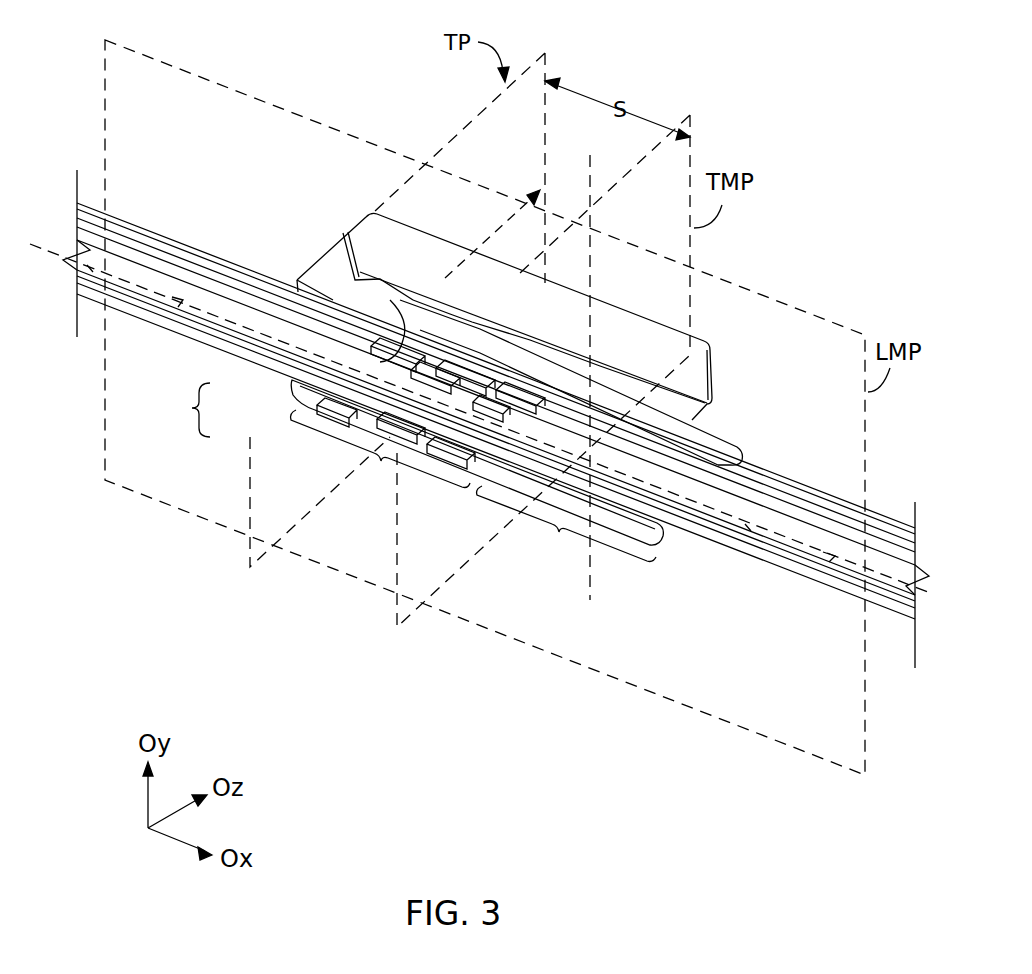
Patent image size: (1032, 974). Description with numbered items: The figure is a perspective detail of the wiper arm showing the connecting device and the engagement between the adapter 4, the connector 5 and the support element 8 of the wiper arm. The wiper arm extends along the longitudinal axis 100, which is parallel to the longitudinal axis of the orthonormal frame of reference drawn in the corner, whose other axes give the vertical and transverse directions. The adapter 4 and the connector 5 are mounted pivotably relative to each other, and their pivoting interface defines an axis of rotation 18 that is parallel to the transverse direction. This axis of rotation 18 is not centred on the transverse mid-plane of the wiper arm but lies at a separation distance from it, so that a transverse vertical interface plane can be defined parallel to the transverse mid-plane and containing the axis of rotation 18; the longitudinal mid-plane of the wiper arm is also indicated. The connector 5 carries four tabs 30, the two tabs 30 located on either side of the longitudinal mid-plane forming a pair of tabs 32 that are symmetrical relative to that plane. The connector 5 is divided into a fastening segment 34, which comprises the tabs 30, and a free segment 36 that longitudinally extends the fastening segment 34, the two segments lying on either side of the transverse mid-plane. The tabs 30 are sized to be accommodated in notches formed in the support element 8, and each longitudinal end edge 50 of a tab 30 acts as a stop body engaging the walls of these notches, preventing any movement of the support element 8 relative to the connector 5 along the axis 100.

The longitudinal axis 100 is at (48, 249).
The adapter 4 is at (364, 248).
The connector 5 is at (503, 357).
The support element 8 is at (712, 505).
The axis of rotation 18 is at (500, 230).
The tab 30 is at (405, 335).
The pair of tabs 32 is at (185, 410).
The fastening segment 34 is at (380, 455).
The free segment 36 is at (566, 527).
The longitudinal end edge 50 is at (587, 450).